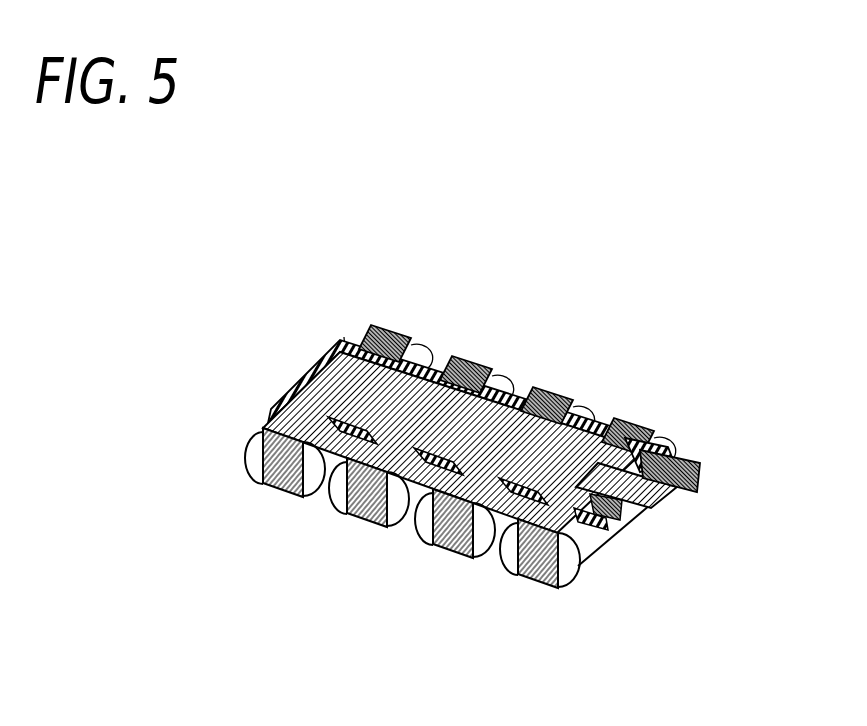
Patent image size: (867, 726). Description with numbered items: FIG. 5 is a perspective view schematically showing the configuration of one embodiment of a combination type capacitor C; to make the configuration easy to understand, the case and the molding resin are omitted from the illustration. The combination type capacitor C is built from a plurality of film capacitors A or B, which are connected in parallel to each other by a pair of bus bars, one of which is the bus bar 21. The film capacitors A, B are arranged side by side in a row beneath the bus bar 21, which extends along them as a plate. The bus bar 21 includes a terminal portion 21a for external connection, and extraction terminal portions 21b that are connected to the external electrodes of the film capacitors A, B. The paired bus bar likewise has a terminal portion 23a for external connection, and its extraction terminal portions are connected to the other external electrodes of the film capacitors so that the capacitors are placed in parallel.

The bus bar 21 is at (494, 511).
The terminal portion 21a is at (492, 471).
The extraction terminal portion 21b is at (560, 587).
The terminal portion 23a is at (690, 452).
The film capacitor A is at (342, 482).
The film capacitor B is at (356, 350).
The combination type capacitor C is at (695, 203).